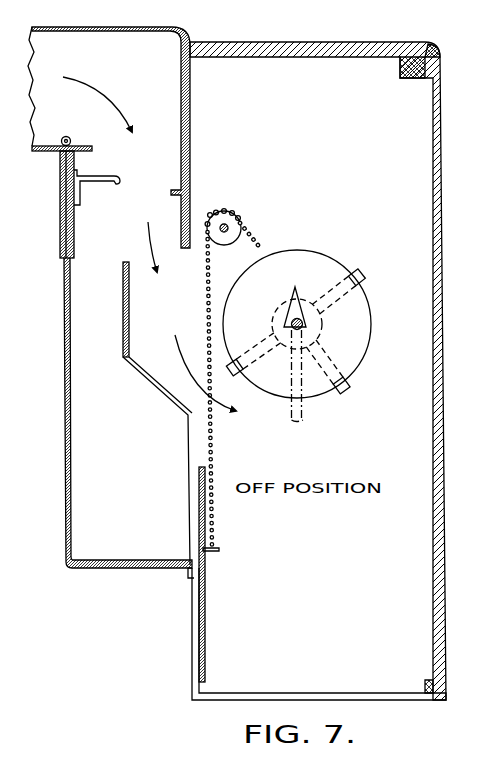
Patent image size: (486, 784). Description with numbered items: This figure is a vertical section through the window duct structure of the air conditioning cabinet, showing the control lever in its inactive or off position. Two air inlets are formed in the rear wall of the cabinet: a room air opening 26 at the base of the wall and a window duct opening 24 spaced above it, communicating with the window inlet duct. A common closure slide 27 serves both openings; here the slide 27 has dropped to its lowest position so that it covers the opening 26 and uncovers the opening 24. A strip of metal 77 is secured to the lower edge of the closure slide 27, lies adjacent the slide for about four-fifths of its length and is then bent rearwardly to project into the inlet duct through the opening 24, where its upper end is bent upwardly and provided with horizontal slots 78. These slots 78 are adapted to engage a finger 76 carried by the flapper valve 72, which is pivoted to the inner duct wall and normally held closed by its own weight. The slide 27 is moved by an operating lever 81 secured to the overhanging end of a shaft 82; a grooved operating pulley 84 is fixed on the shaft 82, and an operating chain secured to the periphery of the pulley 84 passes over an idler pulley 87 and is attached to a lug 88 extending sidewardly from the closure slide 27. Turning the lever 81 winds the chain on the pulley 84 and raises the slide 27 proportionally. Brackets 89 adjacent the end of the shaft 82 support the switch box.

The window duct opening 24 is at (195, 269).
The room air opening 26 is at (192, 660).
The closure slide 27 is at (205, 641).
The flapper valve 72 is at (74, 234).
The finger 76 is at (111, 173).
The strip of metal 77 is at (158, 388).
The horizontal slots 78 is at (123, 318).
The operating lever 81 is at (306, 420).
The shaft 82 is at (303, 325).
The operating pulley 84 is at (318, 263).
The idler pulley 87 is at (218, 212).
The lug 88 is at (219, 552).
The brackets 89 is at (344, 298).